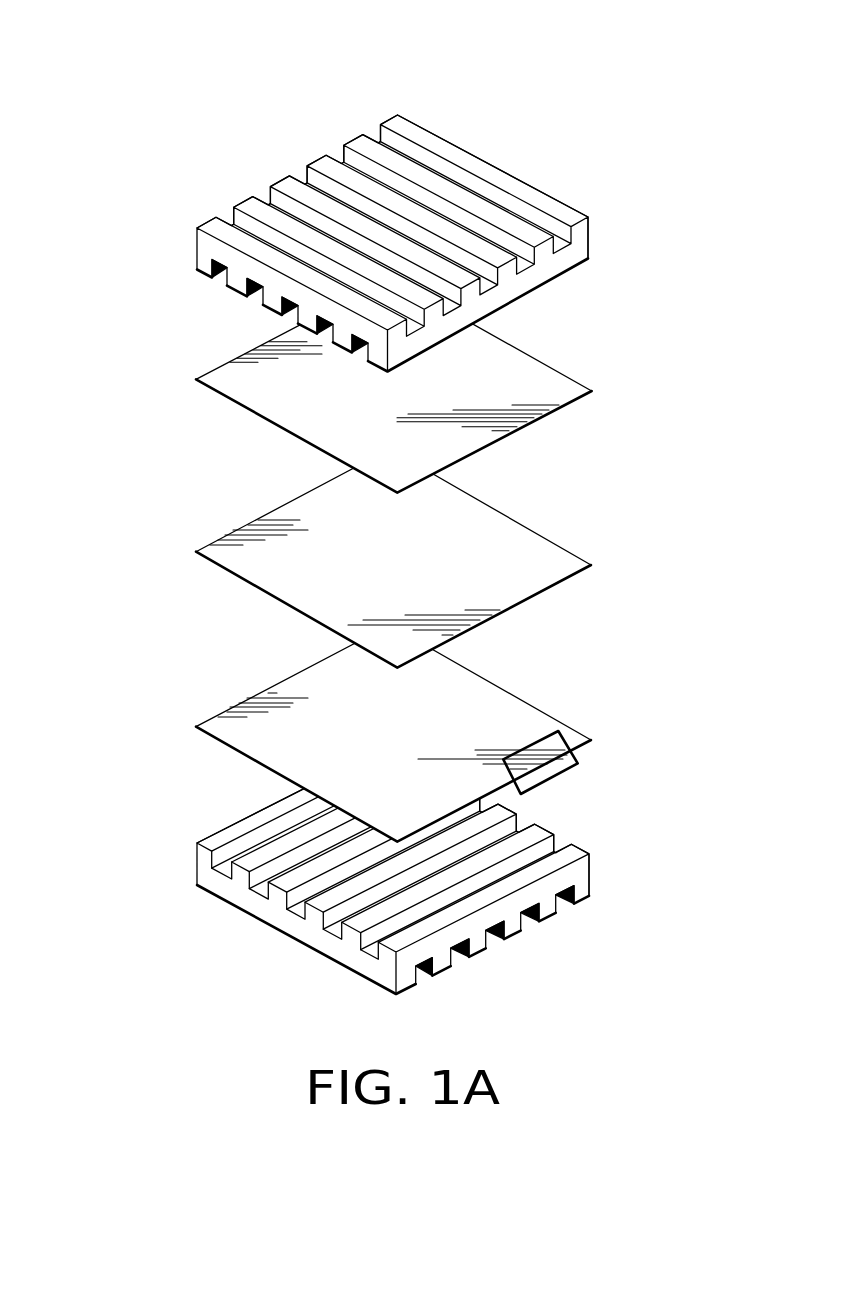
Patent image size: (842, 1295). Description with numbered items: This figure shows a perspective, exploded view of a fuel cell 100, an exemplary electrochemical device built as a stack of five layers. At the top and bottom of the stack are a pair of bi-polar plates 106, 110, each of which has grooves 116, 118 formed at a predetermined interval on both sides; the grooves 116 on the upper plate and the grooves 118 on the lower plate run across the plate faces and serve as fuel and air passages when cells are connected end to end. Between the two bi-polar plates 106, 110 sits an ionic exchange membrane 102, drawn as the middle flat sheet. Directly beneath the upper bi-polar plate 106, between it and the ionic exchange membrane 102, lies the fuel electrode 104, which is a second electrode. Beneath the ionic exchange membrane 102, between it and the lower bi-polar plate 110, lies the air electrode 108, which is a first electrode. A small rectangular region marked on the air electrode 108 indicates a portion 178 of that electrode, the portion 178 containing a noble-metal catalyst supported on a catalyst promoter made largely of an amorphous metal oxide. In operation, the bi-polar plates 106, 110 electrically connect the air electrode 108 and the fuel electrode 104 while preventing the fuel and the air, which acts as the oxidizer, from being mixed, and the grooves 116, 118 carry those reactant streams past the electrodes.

The fuel cell 100 is at (197, 97).
The bi-polar plate 106 is at (365, 241).
The grooves 116 is at (224, 274).
The fuel electrode 104 is at (527, 354).
The ionic exchange membrane 102 is at (527, 527).
The air electrode 108 is at (436, 733).
The portion of the electrode 178 is at (578, 764).
The bi-polar plate 110 is at (440, 869).
The grooves 118 is at (371, 948).